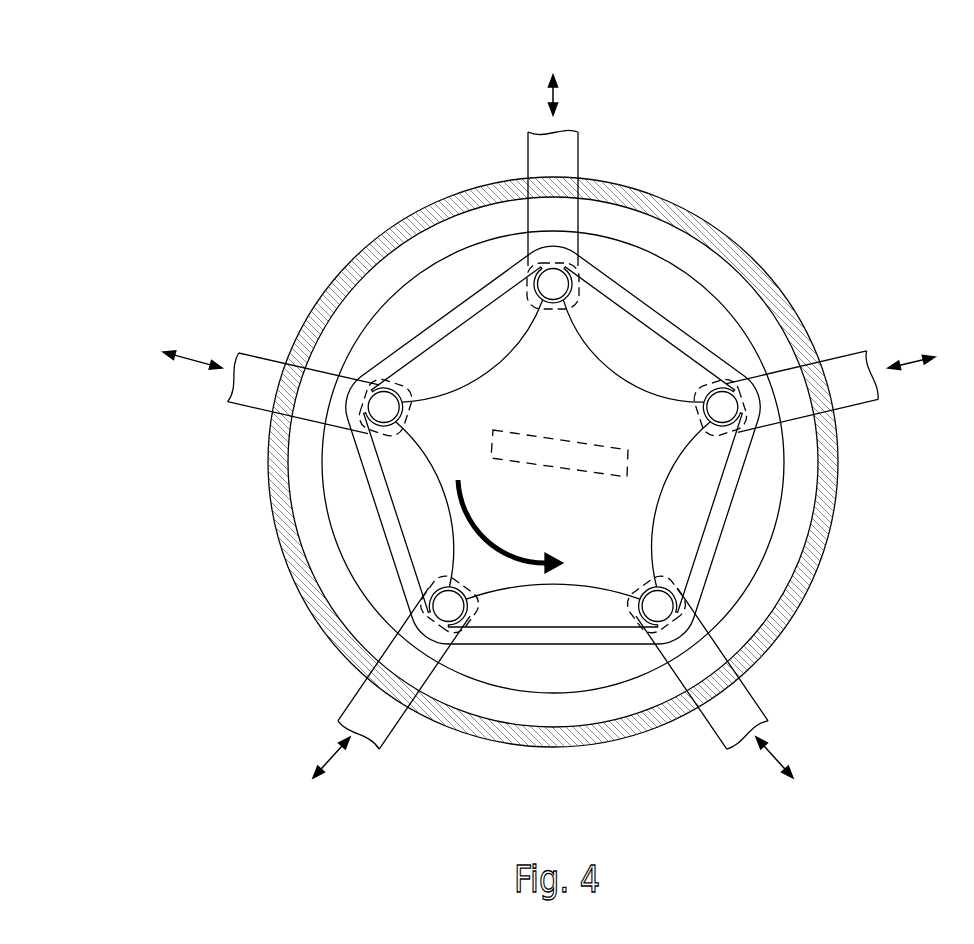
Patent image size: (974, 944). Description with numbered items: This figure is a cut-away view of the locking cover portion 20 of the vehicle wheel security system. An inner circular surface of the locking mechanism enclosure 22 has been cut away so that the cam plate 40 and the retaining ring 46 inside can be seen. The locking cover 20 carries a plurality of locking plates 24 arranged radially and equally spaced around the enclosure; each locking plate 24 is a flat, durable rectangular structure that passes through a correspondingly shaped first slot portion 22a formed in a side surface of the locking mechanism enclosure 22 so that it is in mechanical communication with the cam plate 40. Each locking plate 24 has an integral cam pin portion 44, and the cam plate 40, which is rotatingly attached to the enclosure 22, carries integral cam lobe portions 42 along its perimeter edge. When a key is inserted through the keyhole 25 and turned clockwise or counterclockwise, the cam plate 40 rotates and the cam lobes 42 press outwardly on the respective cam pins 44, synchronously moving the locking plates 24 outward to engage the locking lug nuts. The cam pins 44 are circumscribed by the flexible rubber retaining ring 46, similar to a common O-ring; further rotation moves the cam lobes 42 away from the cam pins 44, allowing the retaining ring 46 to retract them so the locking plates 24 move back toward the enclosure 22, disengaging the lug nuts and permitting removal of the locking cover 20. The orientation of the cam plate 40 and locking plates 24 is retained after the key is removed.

The locking cover portion 20 is at (123, 236).
The locking mechanism enclosure 22 is at (403, 221).
The first slot portion 22a is at (540, 182).
The locking plate 24 is at (566, 147).
The keyhole 25 is at (588, 443).
The cam plate 40 is at (603, 356).
The cam lobe portion 42 is at (556, 283).
The cam pin portion 44 is at (382, 406).
The retaining ring 46 is at (368, 449).